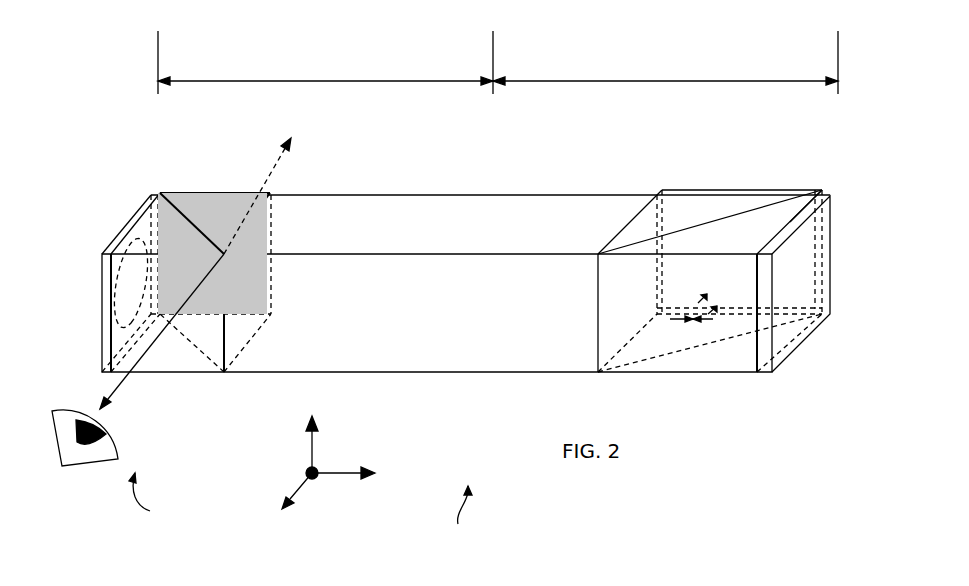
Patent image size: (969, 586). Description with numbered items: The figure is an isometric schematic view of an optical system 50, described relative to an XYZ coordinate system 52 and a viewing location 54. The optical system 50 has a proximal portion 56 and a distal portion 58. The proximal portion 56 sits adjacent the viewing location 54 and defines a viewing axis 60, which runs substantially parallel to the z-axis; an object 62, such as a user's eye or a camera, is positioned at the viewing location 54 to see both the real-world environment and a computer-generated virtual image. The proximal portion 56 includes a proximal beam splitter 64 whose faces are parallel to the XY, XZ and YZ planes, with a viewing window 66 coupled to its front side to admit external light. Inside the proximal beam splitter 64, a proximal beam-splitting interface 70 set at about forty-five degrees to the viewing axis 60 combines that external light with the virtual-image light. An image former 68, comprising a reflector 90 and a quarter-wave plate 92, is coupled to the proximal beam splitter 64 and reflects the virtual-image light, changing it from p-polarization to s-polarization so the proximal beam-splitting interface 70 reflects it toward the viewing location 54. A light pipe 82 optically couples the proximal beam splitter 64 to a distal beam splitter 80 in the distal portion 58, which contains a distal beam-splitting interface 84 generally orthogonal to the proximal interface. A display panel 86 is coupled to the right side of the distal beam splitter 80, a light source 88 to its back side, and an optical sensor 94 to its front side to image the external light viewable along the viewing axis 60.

The optical system 50 is at (464, 515).
The XYZ coordinate system 52 is at (343, 475).
The viewing location 54 is at (154, 499).
The proximal portion 56 is at (348, 80).
The distal portion 58 is at (658, 80).
The viewing axis 60 is at (282, 155).
The object 62 is at (102, 463).
The proximal beam splitter 64 is at (228, 358).
The viewing window 66 is at (228, 190).
The image former 68 is at (123, 228).
The proximal beam-splitting interface 70 is at (177, 210).
The distal beam splitter 80 is at (622, 229).
The light pipe 82 is at (440, 372).
The distal beam-splitting interface 84 is at (640, 241).
The display panel 86 is at (834, 258).
The light source 88 is at (697, 321).
The reflector 90 is at (103, 253).
The quarter-wave plate 92 is at (152, 193).
The optical sensor 94 is at (817, 189).